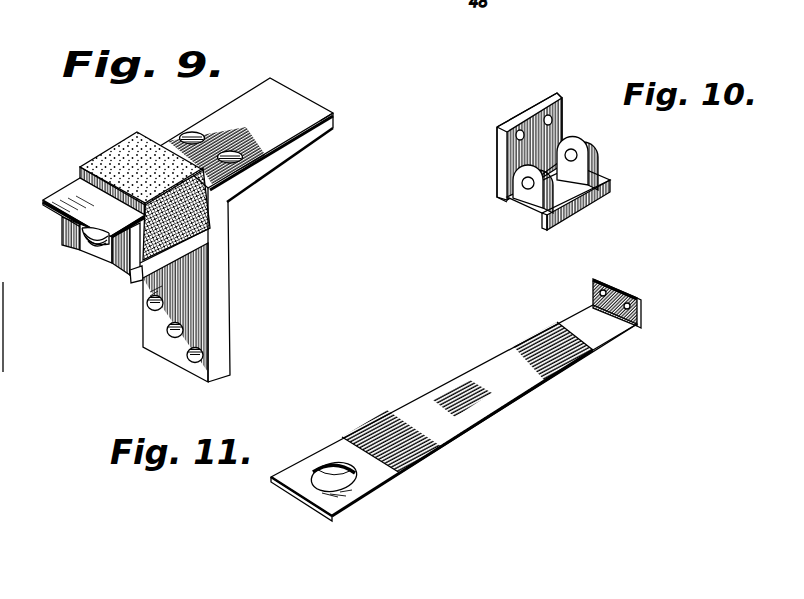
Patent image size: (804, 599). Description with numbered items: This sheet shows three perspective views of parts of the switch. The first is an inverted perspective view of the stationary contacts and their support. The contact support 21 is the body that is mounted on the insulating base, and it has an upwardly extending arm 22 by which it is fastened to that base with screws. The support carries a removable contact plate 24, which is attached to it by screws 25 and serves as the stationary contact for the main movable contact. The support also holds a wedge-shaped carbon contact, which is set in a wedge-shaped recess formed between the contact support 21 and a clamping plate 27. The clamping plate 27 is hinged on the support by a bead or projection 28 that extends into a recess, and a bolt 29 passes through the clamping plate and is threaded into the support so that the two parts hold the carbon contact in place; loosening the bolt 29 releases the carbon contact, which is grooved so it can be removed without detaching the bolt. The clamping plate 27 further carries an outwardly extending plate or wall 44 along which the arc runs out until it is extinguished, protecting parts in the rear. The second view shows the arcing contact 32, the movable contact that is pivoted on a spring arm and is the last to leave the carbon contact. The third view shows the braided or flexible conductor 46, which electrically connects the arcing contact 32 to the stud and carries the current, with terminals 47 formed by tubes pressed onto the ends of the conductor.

In FIG. 9, the contact support 21 is at (307, 183).
In FIG. 9, the upwardly extending arm 22 is at (230, 300).
In FIG. 9, the removable contact plate 24 is at (298, 104).
In FIG. 9, the screws 25 is at (229, 133).
In FIG. 9, the clamping plate 27 is at (133, 243).
In FIG. 9, the bead or projection 28 is at (131, 272).
In FIG. 9, the bolt 29 is at (83, 248).
In FIG. 9, the outwardly extending plate or wall 44 is at (45, 201).
In FIG. 10, the arcing contact 32 is at (500, 198).
In FIG. 11, the braided or flexible conductor 46 is at (473, 373).
In FIG. 11, the terminals 47 is at (613, 344).